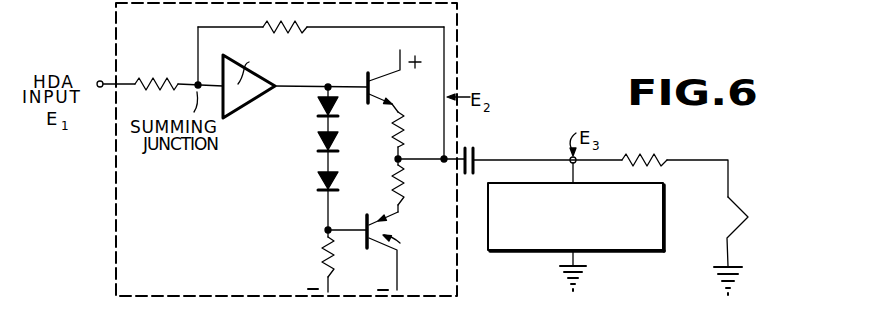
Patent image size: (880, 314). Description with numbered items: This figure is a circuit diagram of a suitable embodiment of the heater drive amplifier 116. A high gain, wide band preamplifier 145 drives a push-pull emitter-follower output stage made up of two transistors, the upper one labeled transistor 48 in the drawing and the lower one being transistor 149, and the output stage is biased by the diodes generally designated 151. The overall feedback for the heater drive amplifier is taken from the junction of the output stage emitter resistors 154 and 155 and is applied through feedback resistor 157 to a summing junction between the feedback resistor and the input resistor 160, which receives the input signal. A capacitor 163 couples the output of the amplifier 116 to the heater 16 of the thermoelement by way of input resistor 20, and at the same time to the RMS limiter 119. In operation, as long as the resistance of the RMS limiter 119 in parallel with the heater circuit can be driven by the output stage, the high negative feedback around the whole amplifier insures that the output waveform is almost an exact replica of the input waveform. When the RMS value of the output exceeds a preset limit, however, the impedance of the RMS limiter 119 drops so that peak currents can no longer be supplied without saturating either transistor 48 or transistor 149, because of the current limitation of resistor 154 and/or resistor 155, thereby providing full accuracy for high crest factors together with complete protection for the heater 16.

The heater drive amplifier 116 is at (459, 61).
The input resistor 160 is at (172, 92).
The feedback resistor 157 is at (265, 24).
The high gain, wide band preamplifier 145 is at (252, 102).
The diodes 151 is at (270, 161).
The transistor Q1 48 is at (387, 89).
The emitter resistor 154 is at (403, 132).
The emitter resistor 155 is at (402, 186).
The transistor 149 is at (393, 248).
The capacitor 163 is at (478, 156).
The RMS limiter 119 is at (625, 252).
The input resistor 20 is at (668, 160).
The heater 16 is at (737, 206).